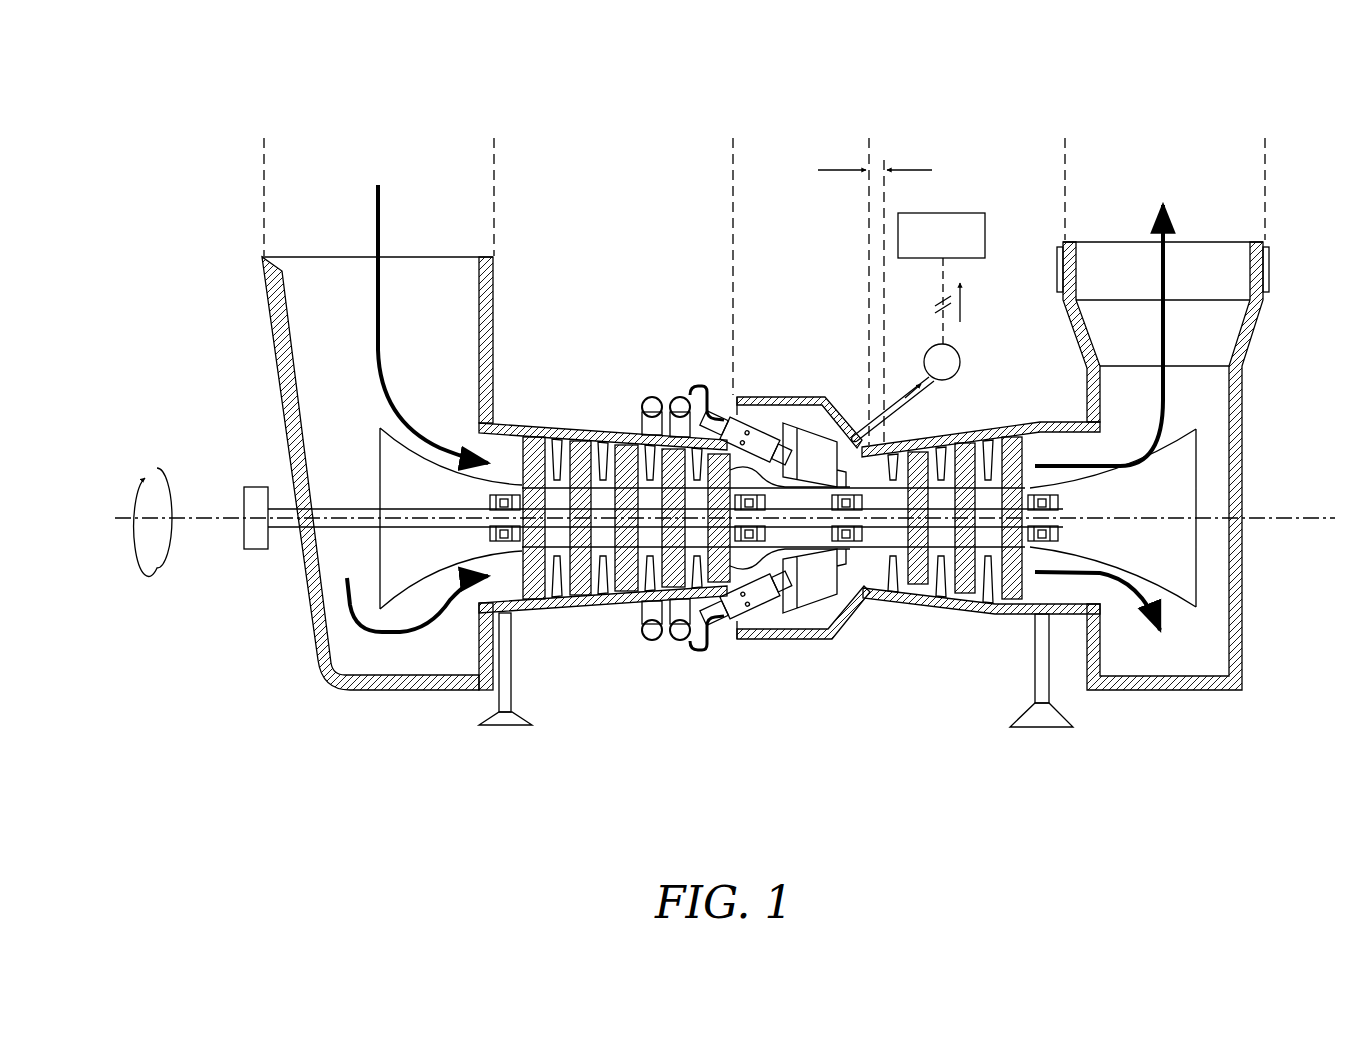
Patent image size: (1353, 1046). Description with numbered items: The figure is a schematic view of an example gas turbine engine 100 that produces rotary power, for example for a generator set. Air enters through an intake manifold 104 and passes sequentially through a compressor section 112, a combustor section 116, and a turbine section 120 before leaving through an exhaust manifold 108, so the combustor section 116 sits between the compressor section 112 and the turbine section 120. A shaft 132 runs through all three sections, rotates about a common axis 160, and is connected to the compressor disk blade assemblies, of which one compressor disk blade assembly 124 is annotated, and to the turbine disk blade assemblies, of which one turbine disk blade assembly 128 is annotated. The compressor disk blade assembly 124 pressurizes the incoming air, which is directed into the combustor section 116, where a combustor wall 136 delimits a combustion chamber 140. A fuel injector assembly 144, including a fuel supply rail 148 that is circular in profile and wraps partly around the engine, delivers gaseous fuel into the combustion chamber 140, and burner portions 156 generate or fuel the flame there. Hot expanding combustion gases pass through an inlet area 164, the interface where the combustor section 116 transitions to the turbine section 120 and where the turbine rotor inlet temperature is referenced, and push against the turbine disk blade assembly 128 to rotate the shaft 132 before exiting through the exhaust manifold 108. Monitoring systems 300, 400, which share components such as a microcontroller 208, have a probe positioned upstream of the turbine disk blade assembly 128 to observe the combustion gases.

The gas turbine engine 100 is at (160, 173).
The intake manifold 104 is at (494, 132).
The exhaust manifold 108 is at (1265, 132).
The compressor section 112 is at (733, 132).
The combustor section 116 is at (869, 132).
The turbine section 120 is at (1063, 132).
The compressor disk blade assembly 124 is at (584, 598).
The turbine disk blade assembly 128 is at (932, 582).
The shaft 132 is at (286, 528).
The combustor wall 136 is at (853, 408).
The combustion chamber 140 is at (838, 608).
The fuel injector assembly 144 is at (650, 368).
The fuel supply rail 148 is at (644, 400).
The burner portion 156 is at (752, 414).
The common axis 160 is at (140, 518).
The inlet area 164 is at (932, 170).
The microcontroller 208 is at (985, 240).
The system 300 is at (964, 393).
The system 400 is at (957, 380).